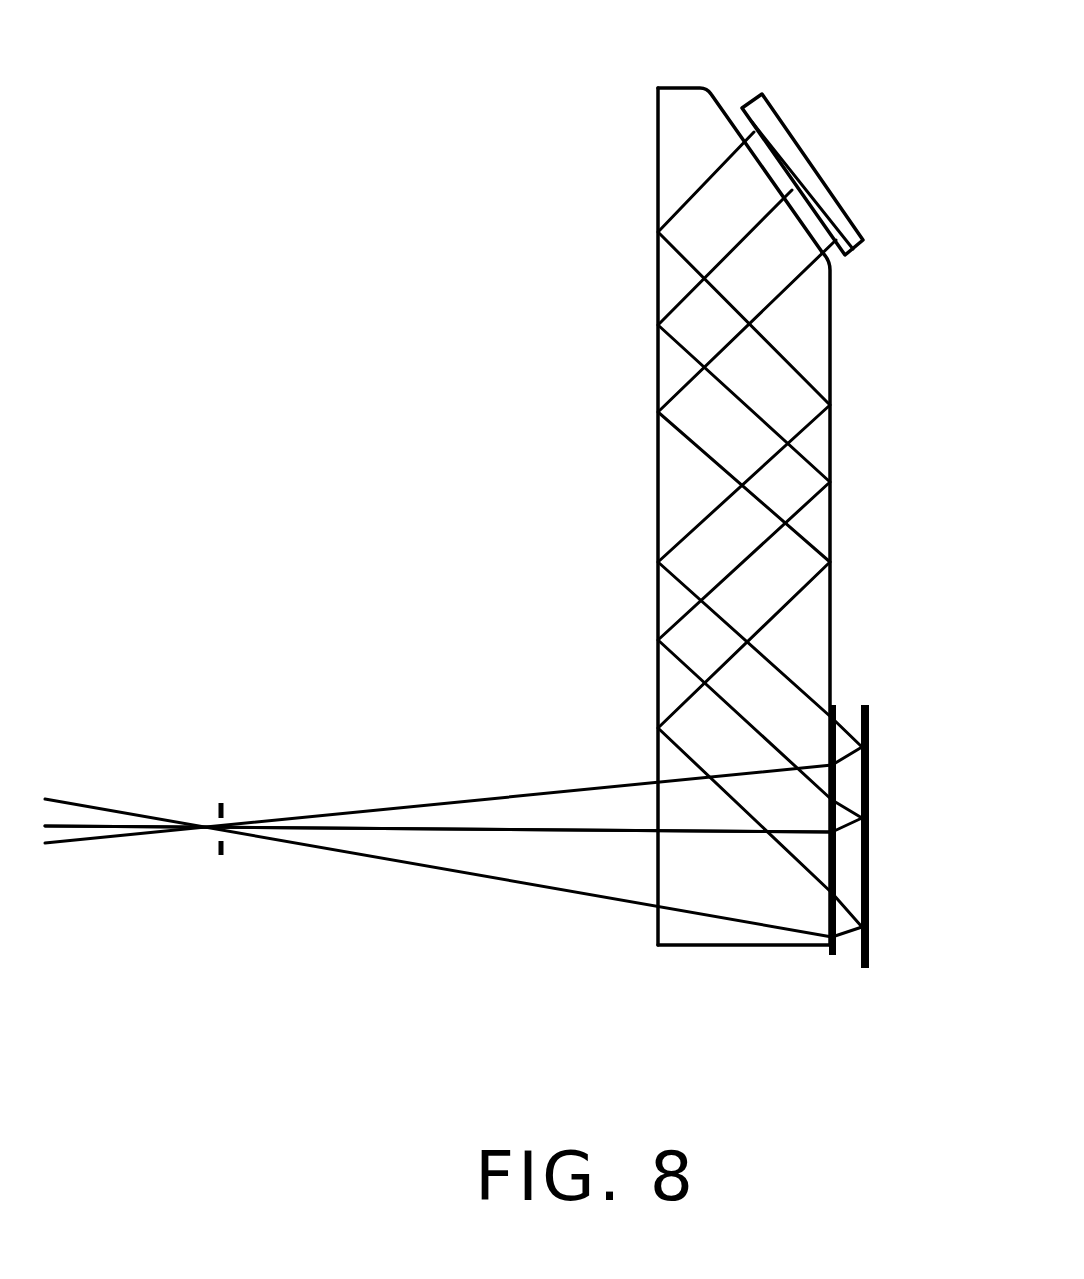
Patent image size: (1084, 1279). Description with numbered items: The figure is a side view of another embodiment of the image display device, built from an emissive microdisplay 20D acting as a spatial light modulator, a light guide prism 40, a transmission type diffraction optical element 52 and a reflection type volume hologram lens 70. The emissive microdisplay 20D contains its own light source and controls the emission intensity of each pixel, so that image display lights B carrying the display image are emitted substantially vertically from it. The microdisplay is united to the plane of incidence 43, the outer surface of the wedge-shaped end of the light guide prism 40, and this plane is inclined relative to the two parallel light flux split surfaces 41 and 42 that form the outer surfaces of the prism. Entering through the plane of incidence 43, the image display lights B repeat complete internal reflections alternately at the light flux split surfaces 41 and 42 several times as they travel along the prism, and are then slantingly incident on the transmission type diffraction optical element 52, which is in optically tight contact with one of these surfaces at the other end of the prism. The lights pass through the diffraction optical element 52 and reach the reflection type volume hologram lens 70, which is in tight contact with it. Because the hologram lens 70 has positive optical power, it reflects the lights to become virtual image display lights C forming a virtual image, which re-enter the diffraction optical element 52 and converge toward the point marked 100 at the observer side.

The light guide prism 40 is at (747, 478).
The light flux split surface 41 is at (832, 353).
The light flux split surface 42 is at (657, 593).
The plane of incidence 43 is at (720, 100).
The emissive microdisplay 20D is at (828, 187).
The transmission type diffraction optical element 52 is at (833, 707).
The reflection type volume hologram lens 70 is at (866, 970).
The focal point (observer eye position) 100 is at (222, 797).
The image display lights B is at (738, 251).
The virtual image display lights C is at (590, 826).